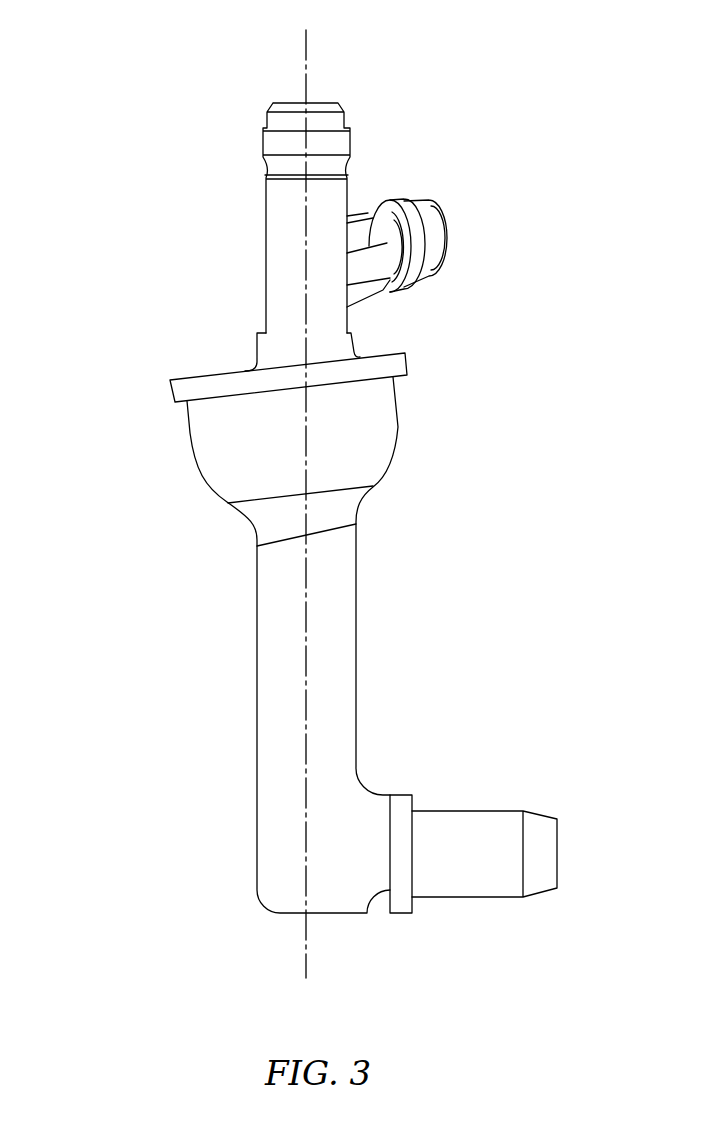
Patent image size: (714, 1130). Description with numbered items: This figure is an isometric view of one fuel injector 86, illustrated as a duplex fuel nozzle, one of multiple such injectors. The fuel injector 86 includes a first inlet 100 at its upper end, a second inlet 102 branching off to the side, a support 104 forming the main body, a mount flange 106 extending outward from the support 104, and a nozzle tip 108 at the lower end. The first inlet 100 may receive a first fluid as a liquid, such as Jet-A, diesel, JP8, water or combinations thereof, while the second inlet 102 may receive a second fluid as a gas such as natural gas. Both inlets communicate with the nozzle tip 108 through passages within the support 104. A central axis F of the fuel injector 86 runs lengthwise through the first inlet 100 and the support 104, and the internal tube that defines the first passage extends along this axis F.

The central axis F is at (307, 42).
The fuel injector 86 is at (459, 382).
The first inlet 100 is at (356, 124).
The second inlet 102 is at (408, 193).
The support 104 is at (410, 452).
The mount flange 106 is at (170, 392).
The nozzle tip 108 is at (498, 797).